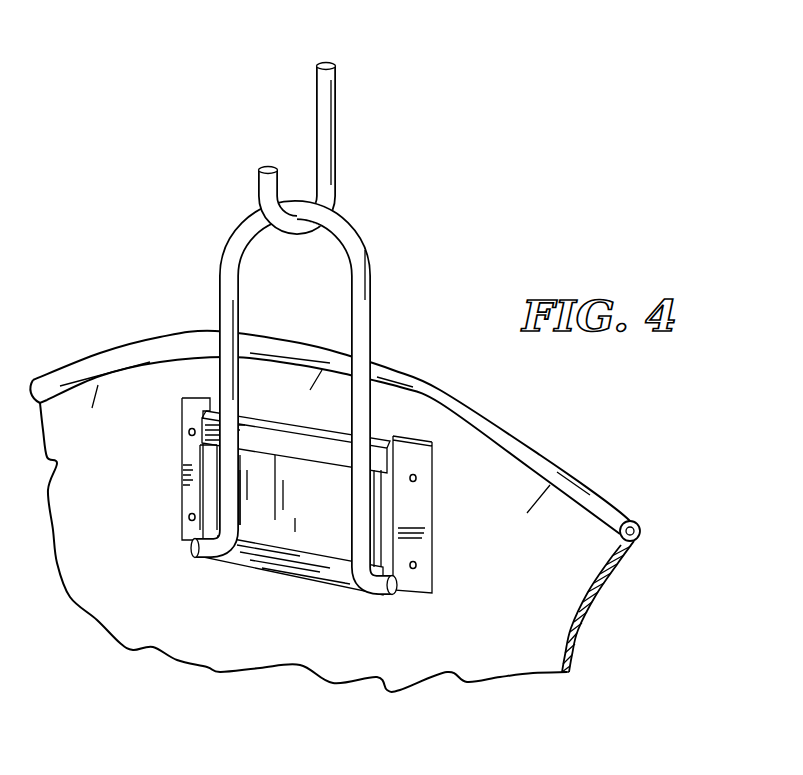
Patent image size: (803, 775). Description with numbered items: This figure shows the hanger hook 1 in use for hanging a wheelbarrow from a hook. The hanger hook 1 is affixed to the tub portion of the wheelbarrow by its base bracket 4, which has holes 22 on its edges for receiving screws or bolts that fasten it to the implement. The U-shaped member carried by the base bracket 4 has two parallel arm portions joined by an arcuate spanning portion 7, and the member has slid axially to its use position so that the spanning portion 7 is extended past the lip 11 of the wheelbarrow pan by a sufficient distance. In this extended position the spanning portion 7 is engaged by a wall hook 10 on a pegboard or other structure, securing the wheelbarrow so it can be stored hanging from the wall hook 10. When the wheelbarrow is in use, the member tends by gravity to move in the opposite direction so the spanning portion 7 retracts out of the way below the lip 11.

The hanger hook 1 is at (138, 593).
The base bracket 4 is at (295, 563).
The spanning portion 7 is at (360, 262).
The wall hook 10 is at (333, 130).
The lip 11 is at (607, 498).
The holes 22 is at (188, 432).